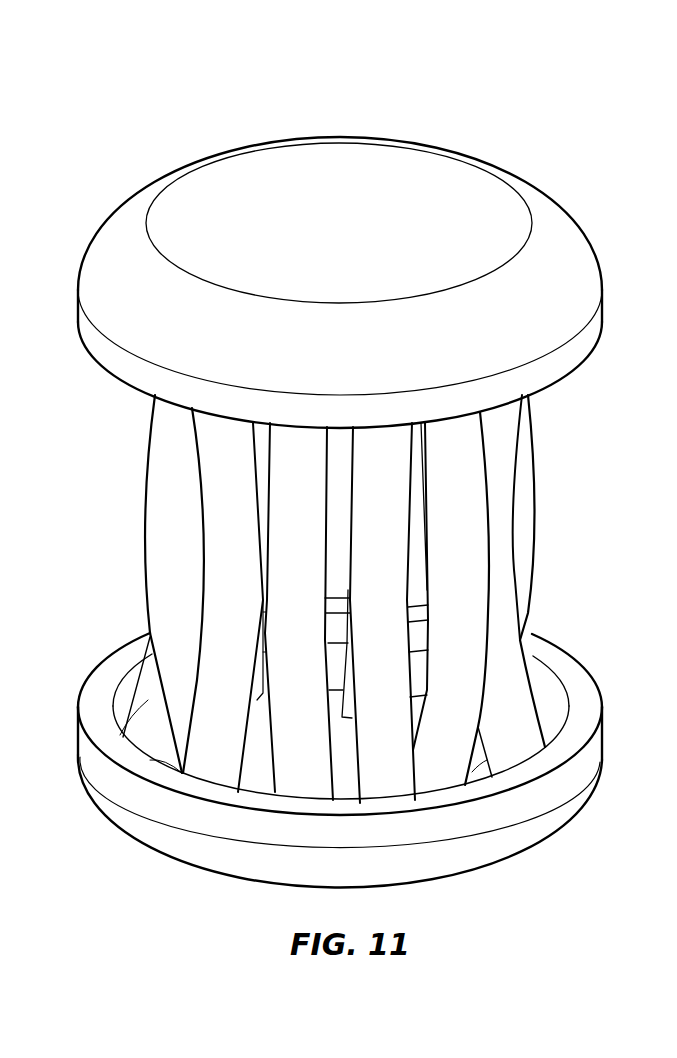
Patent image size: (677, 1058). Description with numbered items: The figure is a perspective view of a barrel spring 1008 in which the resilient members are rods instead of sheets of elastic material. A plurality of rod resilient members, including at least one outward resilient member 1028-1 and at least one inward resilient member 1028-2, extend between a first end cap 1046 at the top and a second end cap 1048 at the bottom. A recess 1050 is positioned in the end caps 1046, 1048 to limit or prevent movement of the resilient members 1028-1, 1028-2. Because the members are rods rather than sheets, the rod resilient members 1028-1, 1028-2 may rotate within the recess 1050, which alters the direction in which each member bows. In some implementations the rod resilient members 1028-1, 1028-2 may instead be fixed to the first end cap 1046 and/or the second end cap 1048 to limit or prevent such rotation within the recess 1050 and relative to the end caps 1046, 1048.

The barrel spring 1008 is at (571, 93).
The first end cap 1046 is at (570, 264).
The outward resilient member 1028-1 is at (473, 522).
The inward resilient member 1028-2 is at (510, 615).
The recess 1050 is at (548, 722).
The second end cap 1048 is at (368, 760).